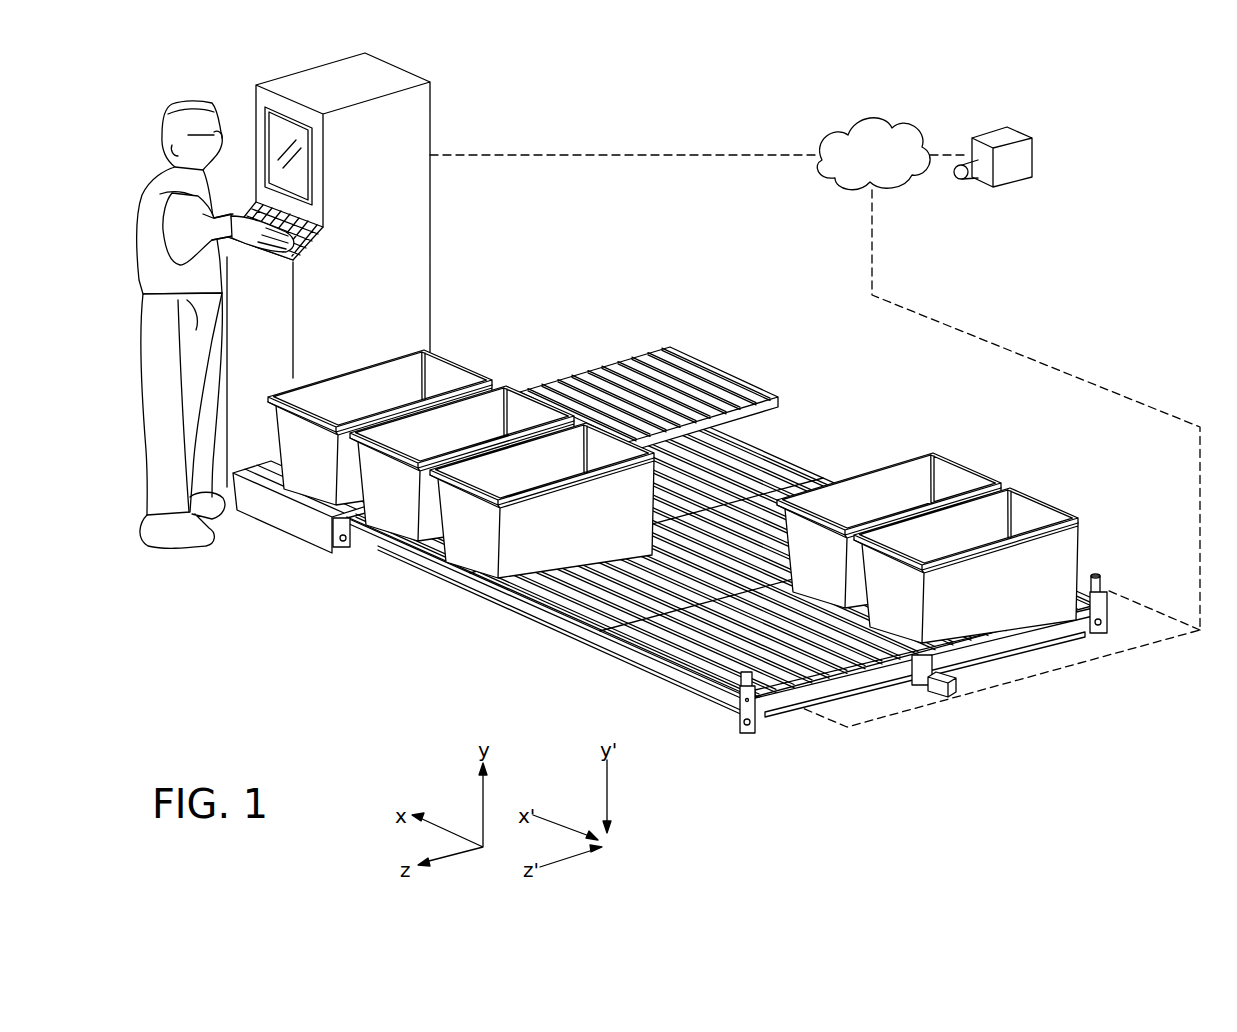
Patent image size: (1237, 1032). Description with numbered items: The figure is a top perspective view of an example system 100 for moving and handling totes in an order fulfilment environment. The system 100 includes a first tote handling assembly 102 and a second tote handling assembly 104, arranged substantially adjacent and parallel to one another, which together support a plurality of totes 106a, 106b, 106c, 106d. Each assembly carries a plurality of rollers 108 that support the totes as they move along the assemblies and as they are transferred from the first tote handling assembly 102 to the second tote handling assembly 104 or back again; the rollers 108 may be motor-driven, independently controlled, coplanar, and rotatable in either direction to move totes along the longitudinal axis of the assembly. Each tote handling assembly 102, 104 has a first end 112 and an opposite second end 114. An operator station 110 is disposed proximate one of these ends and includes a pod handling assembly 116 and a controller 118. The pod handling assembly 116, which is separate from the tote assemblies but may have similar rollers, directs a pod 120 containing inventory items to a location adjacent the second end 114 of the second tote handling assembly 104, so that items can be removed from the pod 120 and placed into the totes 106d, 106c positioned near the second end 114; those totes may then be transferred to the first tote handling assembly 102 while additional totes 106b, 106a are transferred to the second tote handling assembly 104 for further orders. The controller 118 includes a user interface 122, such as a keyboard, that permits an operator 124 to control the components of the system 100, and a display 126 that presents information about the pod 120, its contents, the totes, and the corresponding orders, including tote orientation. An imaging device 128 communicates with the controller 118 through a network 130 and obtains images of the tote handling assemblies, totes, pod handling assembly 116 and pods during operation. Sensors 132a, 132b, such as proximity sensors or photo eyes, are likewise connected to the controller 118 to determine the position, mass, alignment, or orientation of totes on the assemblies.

The system 100 is at (1072, 245).
The first tote handling assembly 102 is at (1052, 655).
The second tote handling assembly 104 is at (877, 698).
The tote 106a is at (1037, 517).
The tote 106b is at (963, 477).
The tote 106c is at (477, 537).
The tote 106d is at (395, 507).
The rollers 108 is at (757, 473).
The operator station 110 is at (280, 543).
The first end 112 is at (778, 723).
The second end 114 is at (357, 556).
The pod handling assembly 116 is at (668, 348).
The controller 118 is at (432, 142).
The pod 120 is at (458, 380).
The user interface 122 is at (305, 247).
The operator 124 is at (183, 553).
The display 126 is at (273, 127).
The imaging device 128 is at (1033, 158).
The network 130 is at (893, 180).
The sensor 132a is at (1107, 585).
The sensor 132b is at (741, 688).